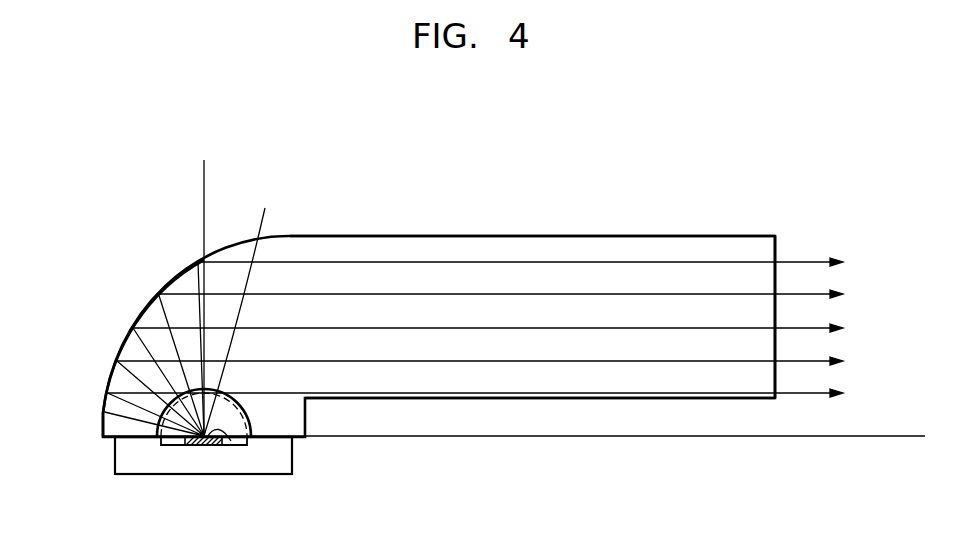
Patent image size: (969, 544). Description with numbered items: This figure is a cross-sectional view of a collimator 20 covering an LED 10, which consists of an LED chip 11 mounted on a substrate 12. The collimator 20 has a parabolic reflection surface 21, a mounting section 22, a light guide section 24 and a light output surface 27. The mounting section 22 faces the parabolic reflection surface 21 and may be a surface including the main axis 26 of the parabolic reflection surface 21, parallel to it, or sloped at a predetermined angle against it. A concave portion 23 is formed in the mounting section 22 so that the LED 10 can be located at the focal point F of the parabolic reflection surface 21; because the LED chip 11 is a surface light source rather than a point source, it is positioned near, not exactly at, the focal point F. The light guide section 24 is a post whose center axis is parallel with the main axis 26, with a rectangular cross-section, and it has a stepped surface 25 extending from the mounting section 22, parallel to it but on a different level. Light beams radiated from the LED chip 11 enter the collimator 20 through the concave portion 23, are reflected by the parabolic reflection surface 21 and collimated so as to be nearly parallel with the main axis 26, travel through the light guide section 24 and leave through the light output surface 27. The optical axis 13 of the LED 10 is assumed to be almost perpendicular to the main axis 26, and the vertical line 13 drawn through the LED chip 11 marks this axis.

The LED 10 is at (114, 457).
The LED chip 11 is at (233, 440).
The substrate 12 is at (174, 462).
The optical axis 13 is at (203, 230).
The collimator 20 is at (668, 233).
The parabolic reflection surface 21 is at (142, 313).
The mounting section 22 is at (104, 437).
The concave portion 23 is at (107, 412).
The light guide section 24 is at (544, 235).
The stepped surface 25 is at (543, 398).
The main axis 26 is at (882, 436).
The light output surface 27 is at (778, 252).
The focal point F is at (239, 307).